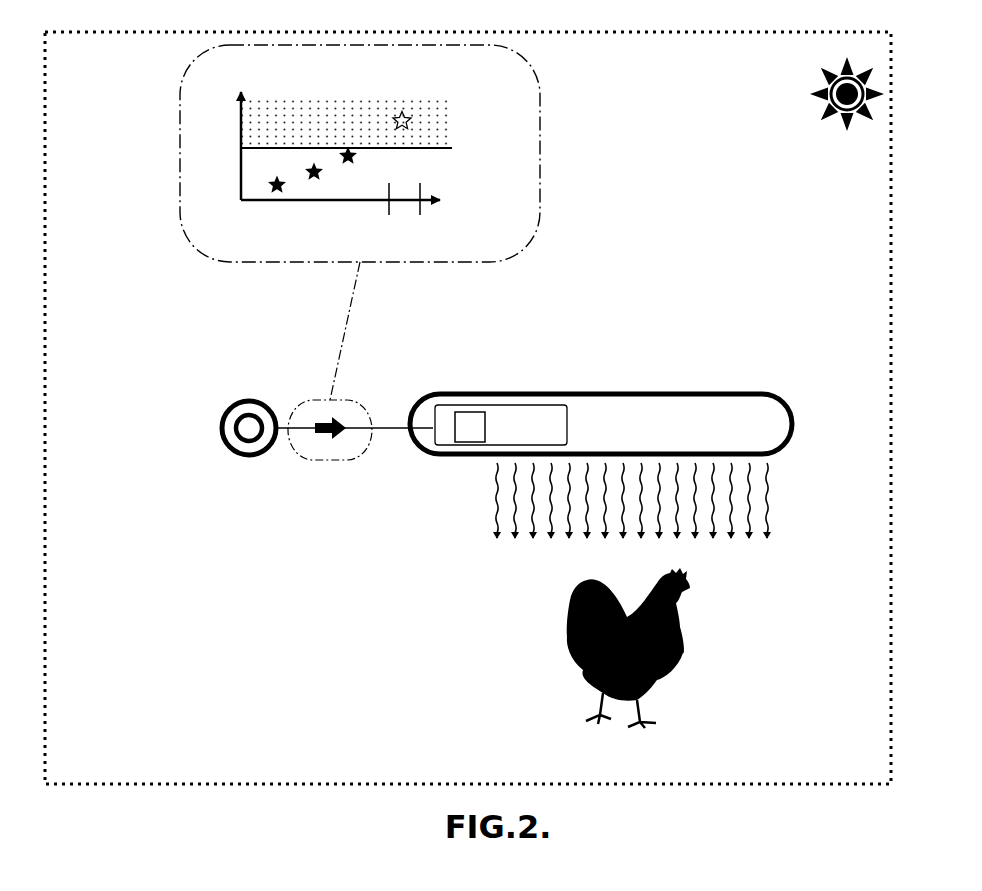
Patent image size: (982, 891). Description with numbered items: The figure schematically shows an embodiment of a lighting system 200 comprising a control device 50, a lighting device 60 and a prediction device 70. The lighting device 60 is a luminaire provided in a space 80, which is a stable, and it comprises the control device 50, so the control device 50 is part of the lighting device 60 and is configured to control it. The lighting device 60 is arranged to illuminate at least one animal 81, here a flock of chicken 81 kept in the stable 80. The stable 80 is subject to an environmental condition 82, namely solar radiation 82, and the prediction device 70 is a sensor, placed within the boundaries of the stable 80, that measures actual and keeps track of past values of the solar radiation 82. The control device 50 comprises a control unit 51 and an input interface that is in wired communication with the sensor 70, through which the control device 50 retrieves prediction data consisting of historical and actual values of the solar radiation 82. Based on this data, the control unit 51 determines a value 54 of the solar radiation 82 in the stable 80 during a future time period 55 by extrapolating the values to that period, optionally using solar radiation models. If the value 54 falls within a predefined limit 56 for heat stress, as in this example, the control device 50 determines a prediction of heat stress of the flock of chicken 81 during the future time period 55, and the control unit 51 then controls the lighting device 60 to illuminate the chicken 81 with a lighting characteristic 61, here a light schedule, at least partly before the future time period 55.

The control device 50 is at (562, 410).
The control unit 51 is at (463, 446).
The value of the solar radiation 54 is at (405, 113).
The future time period 55 is at (400, 208).
The predefined limit for heat stress 56 is at (453, 149).
The lighting device 60 is at (771, 389).
The lighting characteristic 61 is at (775, 503).
The prediction device 70 is at (253, 467).
The space 80 is at (892, 192).
The animal 81 is at (680, 665).
The environmental condition 82 is at (815, 92).
The lighting system 200 is at (440, 675).